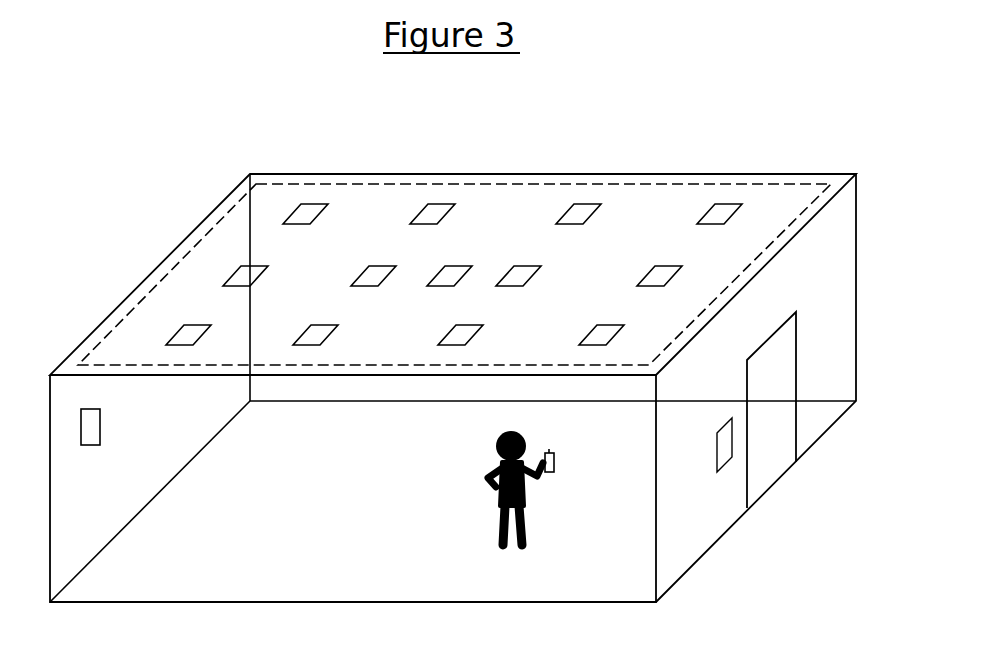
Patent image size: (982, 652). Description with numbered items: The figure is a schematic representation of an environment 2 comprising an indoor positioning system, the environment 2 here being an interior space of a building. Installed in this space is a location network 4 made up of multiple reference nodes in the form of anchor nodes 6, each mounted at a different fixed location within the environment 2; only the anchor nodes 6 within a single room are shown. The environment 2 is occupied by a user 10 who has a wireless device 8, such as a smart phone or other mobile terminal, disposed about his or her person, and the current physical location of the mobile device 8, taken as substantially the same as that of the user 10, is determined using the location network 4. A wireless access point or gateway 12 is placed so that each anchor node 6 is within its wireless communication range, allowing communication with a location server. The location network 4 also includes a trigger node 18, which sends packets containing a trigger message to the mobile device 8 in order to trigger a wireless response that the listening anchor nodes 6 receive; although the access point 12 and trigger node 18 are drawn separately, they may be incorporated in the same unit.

The environment 2 is at (698, 173).
The location network 4 is at (547, 185).
The anchor nodes 6 is at (590, 213).
The trigger node 18 is at (457, 266).
The wireless device 8 is at (554, 460).
The user 10 is at (498, 510).
The wireless access point, router or gateway 12 is at (100, 430).